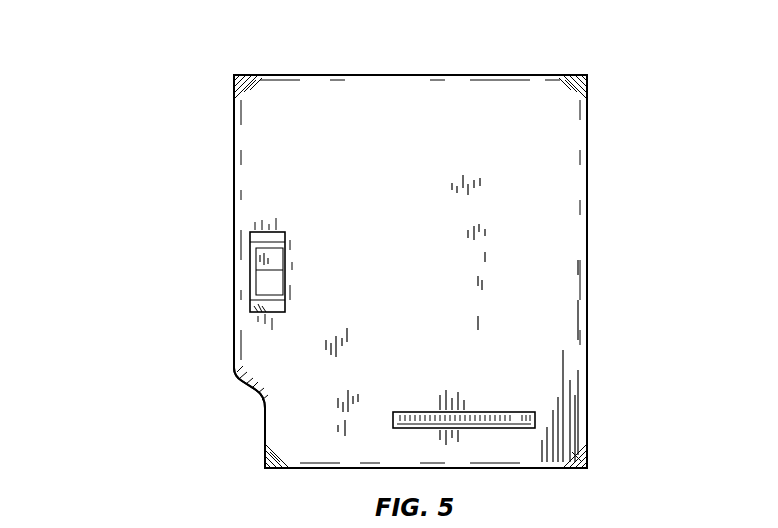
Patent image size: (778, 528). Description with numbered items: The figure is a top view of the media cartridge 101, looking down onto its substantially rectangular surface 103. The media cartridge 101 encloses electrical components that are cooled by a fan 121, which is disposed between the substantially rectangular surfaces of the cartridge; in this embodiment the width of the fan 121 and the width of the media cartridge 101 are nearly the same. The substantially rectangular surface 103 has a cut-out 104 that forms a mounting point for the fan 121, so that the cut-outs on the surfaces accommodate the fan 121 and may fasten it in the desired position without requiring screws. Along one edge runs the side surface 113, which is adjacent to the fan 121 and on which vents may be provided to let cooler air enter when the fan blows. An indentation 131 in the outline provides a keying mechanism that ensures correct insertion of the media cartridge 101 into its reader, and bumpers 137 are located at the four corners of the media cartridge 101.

The media cartridge 101 is at (353, 271).
The substantially rectangular surface 103 is at (340, 176).
The cut-out 104 is at (262, 313).
The side surface 113 is at (589, 234).
The fan 121 is at (260, 272).
The indentation 131 is at (230, 418).
The bumpers 137 is at (234, 75).